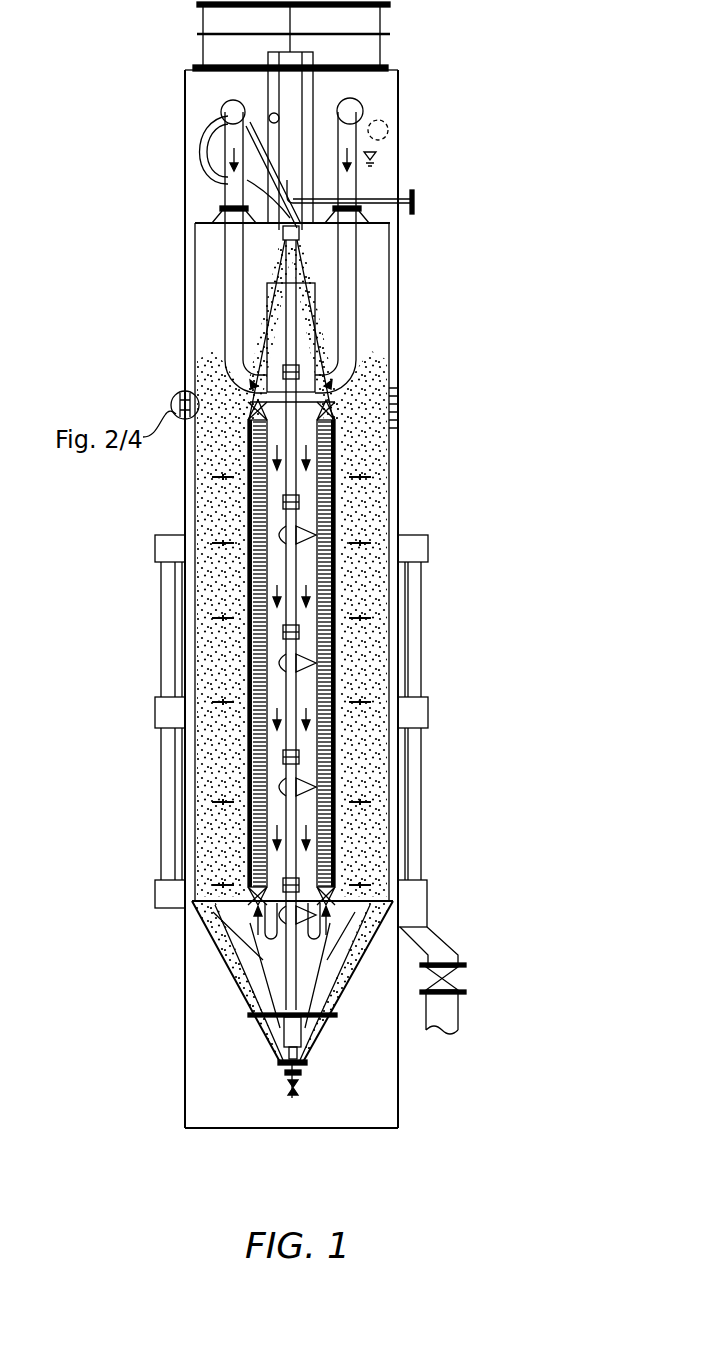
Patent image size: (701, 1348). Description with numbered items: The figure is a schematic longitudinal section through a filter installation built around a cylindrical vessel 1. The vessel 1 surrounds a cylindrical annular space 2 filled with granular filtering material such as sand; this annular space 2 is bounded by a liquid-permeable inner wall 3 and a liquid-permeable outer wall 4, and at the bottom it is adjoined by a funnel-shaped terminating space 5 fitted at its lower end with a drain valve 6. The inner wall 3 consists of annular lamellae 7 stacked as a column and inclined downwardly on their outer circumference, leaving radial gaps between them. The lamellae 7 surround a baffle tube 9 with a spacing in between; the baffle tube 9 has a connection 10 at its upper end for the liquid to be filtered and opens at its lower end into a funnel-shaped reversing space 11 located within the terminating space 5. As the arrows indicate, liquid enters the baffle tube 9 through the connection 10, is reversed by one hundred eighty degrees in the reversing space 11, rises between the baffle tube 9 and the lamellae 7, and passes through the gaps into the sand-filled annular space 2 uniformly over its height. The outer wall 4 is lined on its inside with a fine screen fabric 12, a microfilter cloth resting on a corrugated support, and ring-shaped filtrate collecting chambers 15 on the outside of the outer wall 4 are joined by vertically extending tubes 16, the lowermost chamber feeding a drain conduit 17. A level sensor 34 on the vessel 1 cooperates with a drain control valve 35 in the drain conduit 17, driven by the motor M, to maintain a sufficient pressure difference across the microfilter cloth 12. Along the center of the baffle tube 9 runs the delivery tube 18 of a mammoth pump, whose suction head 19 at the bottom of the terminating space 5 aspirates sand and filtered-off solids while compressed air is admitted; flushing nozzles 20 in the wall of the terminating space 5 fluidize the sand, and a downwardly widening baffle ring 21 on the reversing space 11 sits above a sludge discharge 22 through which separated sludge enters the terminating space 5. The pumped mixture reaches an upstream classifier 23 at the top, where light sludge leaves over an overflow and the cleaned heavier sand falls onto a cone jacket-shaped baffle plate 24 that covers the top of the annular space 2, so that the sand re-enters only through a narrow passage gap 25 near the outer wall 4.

The cylindrical vessel 1 is at (183, 180).
The annular space 2 is at (362, 640).
The inner wall 3 is at (337, 822).
The outer wall 4 is at (388, 677).
The funnel-shaped terminating space 5 is at (320, 1038).
The drain valve 6 is at (305, 1083).
The annular lamellae 7 is at (337, 450).
The baffle tube 9 is at (302, 230).
The connection 10 is at (232, 387).
The reversing space 11 is at (233, 982).
The fine screen fabric 12 is at (388, 502).
The filtrate collecting chambers 15 is at (155, 556).
The vertically extending tubes 16 is at (428, 905).
The drain conduit 17 is at (430, 940).
The delivery tube 18 is at (287, 522).
The suction head 19 is at (257, 1037).
The flushing nozzles 20 is at (337, 1007).
The baffle ring 21 is at (247, 930).
The sludge discharge 22 is at (280, 957).
The upstream classifier 23 is at (273, 75).
The cone jacket-shaped baffle plate 24 is at (280, 247).
The passage gap 25 is at (178, 392).
The level sensor 34 is at (390, 123).
The drain control valve 35 is at (465, 1000).
The valve M is at (455, 978).